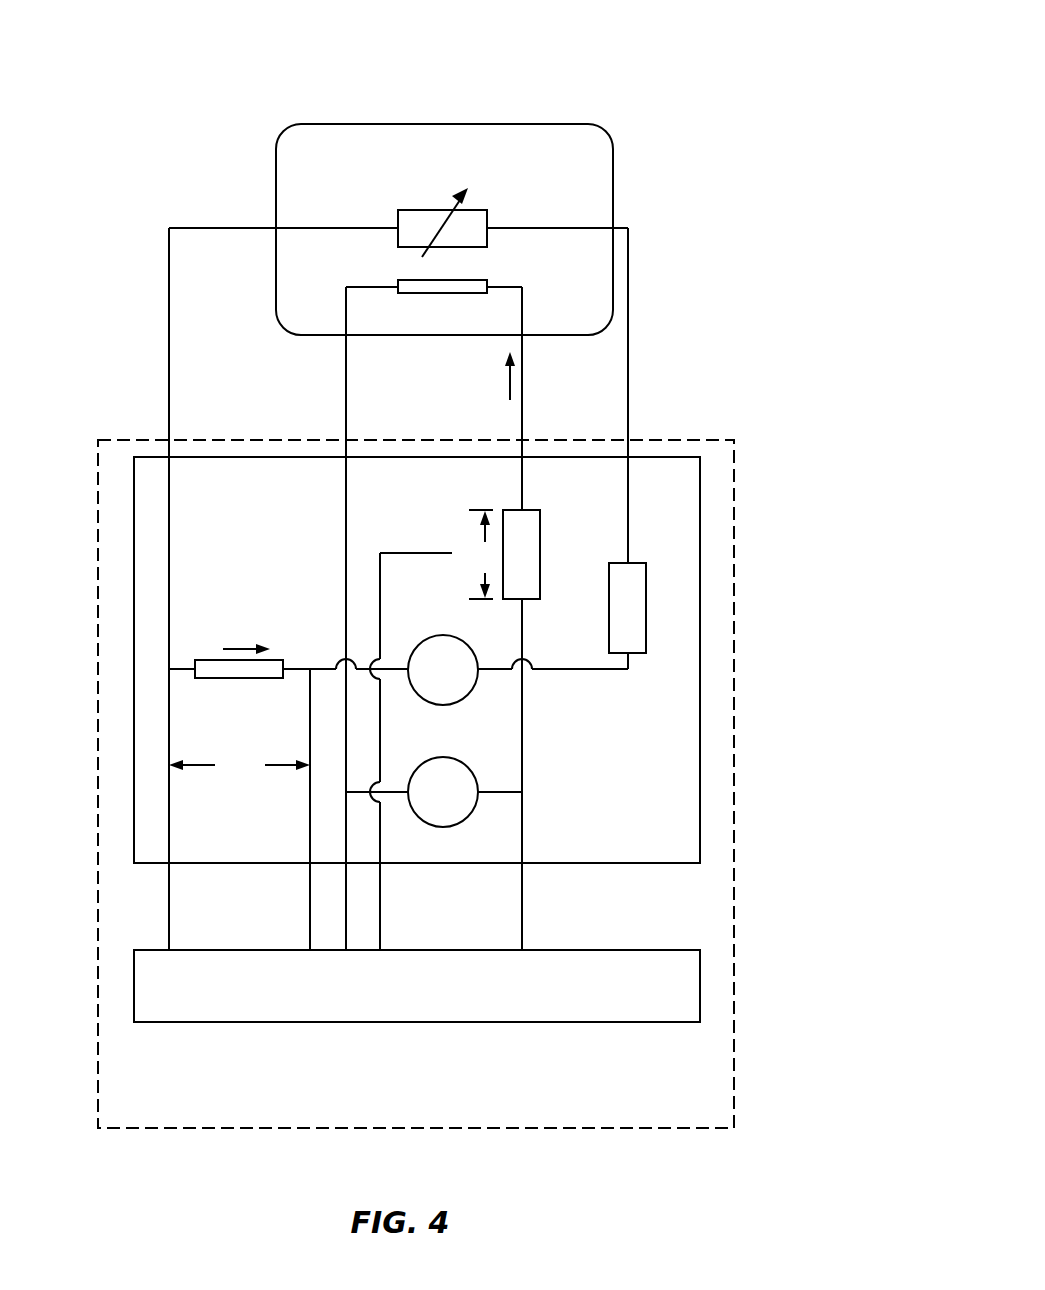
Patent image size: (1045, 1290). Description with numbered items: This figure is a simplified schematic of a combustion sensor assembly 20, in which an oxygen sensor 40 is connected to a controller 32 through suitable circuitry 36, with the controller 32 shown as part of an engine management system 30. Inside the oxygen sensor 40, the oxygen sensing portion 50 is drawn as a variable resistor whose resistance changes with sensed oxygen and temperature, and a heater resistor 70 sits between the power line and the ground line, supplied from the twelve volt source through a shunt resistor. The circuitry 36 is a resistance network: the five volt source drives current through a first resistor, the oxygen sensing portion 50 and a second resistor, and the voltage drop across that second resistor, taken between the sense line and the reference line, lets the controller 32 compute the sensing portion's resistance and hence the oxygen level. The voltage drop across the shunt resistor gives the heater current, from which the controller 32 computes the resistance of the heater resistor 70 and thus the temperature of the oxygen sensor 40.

The combustion sensor assembly 20 is at (630, 68).
The oxygen sensor 40 is at (613, 175).
The oxygen sensing portion 50 is at (480, 210).
The heater resistor 70 is at (453, 293).
The engine management system 30 is at (404, 1110).
The controller 32 is at (404, 1008).
The circuitry 36 is at (700, 563).